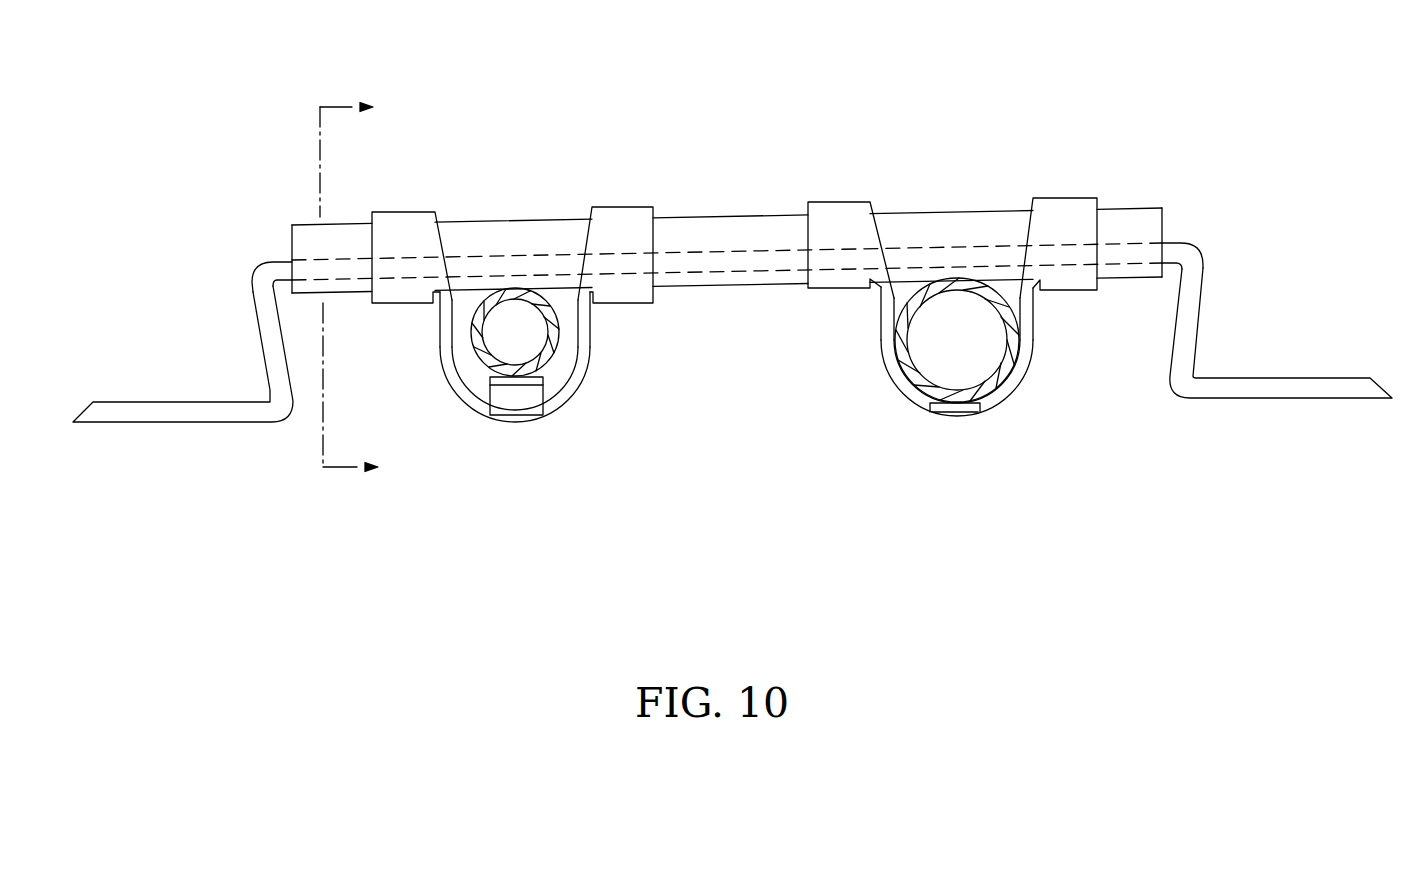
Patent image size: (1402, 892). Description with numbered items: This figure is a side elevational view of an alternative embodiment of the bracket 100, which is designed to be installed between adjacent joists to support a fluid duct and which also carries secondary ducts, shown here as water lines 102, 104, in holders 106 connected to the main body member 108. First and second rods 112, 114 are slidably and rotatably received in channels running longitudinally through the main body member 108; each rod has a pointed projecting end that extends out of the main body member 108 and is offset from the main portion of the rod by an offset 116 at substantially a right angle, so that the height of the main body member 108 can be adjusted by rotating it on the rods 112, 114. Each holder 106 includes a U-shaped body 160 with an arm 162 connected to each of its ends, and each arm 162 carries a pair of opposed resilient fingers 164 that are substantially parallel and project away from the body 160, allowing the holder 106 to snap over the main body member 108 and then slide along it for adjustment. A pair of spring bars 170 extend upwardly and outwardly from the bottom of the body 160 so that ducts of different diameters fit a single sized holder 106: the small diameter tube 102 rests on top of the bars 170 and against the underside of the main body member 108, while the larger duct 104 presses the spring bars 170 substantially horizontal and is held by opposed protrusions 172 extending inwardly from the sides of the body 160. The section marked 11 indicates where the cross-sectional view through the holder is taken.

The bracket 100 is at (732, 282).
The water line 102 is at (552, 357).
The water line 104 is at (1007, 367).
The holder 106 is at (723, 384).
The main body member 108 is at (754, 215).
The first rod 112 is at (1192, 257).
The second rod 114 is at (268, 277).
The offset 116 is at (268, 332).
The U-shaped body 160 is at (437, 379).
The arm 162 is at (393, 226).
The resilient fingers 164 is at (772, 205).
The spring bars 170 is at (512, 400).
The protrusions 172 is at (450, 332).
The section line 11- 11 is at (366, 288).